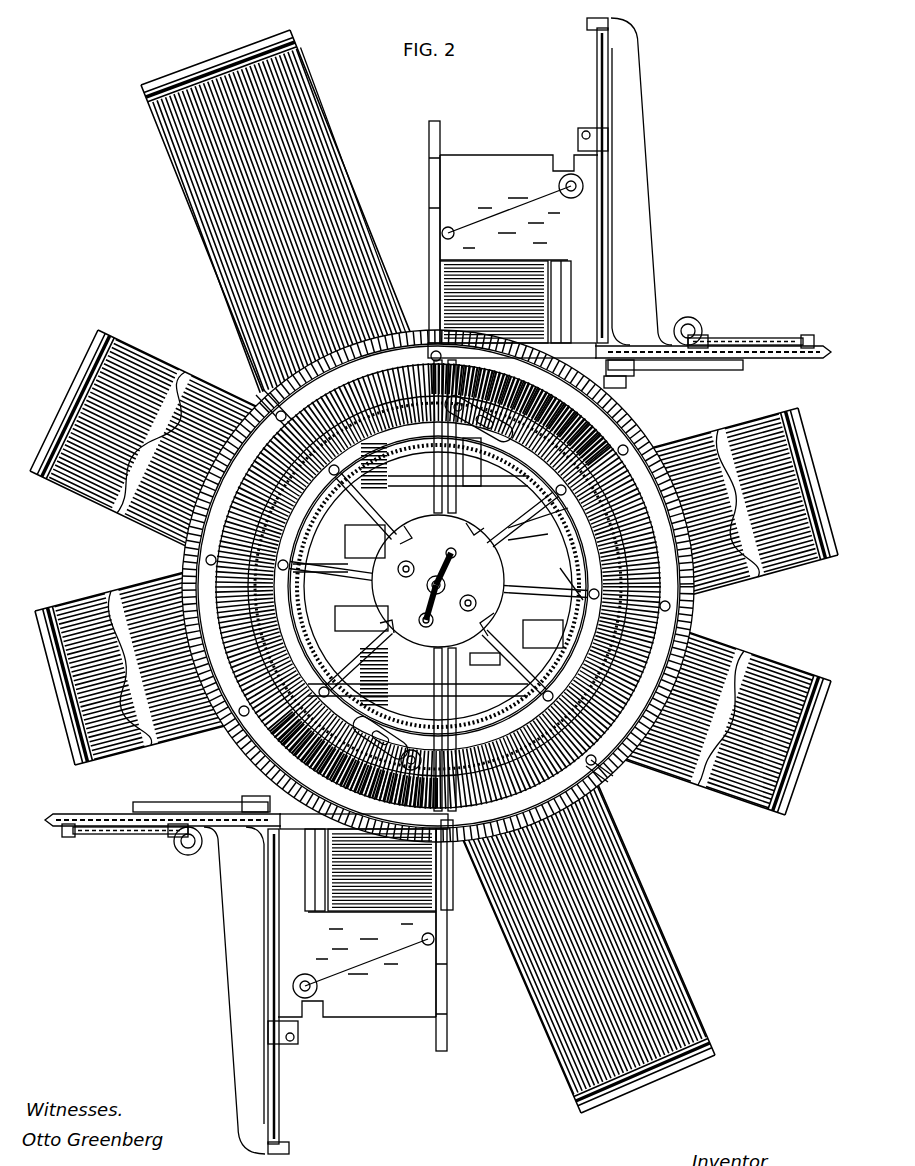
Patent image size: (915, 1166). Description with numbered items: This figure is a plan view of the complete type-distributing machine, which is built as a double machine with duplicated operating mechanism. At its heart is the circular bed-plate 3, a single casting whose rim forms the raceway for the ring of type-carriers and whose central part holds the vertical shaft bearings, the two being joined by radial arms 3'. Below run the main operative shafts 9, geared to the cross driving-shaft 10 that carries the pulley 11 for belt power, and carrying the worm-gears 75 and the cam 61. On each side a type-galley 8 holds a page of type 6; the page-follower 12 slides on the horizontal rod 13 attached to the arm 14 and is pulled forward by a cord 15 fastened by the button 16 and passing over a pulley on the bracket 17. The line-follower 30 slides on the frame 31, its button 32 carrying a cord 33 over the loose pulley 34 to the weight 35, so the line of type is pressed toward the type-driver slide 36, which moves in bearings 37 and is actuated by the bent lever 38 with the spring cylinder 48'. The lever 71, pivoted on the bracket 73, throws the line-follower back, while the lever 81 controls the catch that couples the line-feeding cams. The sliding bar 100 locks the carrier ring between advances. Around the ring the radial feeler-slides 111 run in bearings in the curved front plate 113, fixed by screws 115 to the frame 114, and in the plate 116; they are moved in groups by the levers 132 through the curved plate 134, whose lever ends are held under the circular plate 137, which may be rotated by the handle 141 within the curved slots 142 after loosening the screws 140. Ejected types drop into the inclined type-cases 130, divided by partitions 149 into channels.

The circular bed-plate 3 is at (441, 581).
The radial arms 3' is at (563, 574).
The type 6 is at (470, 256).
The type-galley 8 is at (438, 586).
The main operative shafts 9 is at (478, 478).
The cross driving-shaft 10 is at (388, 575).
The pulley 11 is at (330, 610).
The page-follower 12 is at (438, 586).
The horizontal rod 13 is at (590, 80).
The arm 14 is at (628, 124).
The cord 15 is at (560, 256).
The button 16 is at (551, 176).
The bracket 17 is at (560, 380).
The line-follower 30 is at (785, 350).
The frame 31 is at (645, 342).
The button 32 is at (800, 327).
The cord 33 is at (745, 330).
The loose pulley 34 is at (700, 328).
The weight 35 is at (678, 312).
The type-driver slide 36 is at (432, 912).
The bearings 37 is at (428, 236).
The bent lever 38 is at (445, 870).
The spring cylinder 48' is at (441, 586).
The cam 61 is at (478, 646).
The lever 71 is at (655, 362).
The bracket 73 is at (618, 370).
The worm-gears 75 is at (478, 475).
The lever 81 is at (610, 382).
The sliding bar 100 is at (440, 498).
The feeler-slide 111 is at (185, 546).
The curved front plate 113 is at (268, 380).
The frame 114 is at (625, 440).
The screws 115 is at (592, 765).
The plate 116 is at (570, 520).
The type-case 130 is at (205, 211).
The levers 132 is at (519, 529).
The curved plate 134 is at (428, 586).
The circular plate 137 is at (421, 592).
The screws 140 is at (438, 581).
The handle 141 is at (463, 564).
The curved slots 142 is at (458, 600).
The partitions 149 is at (705, 1040).